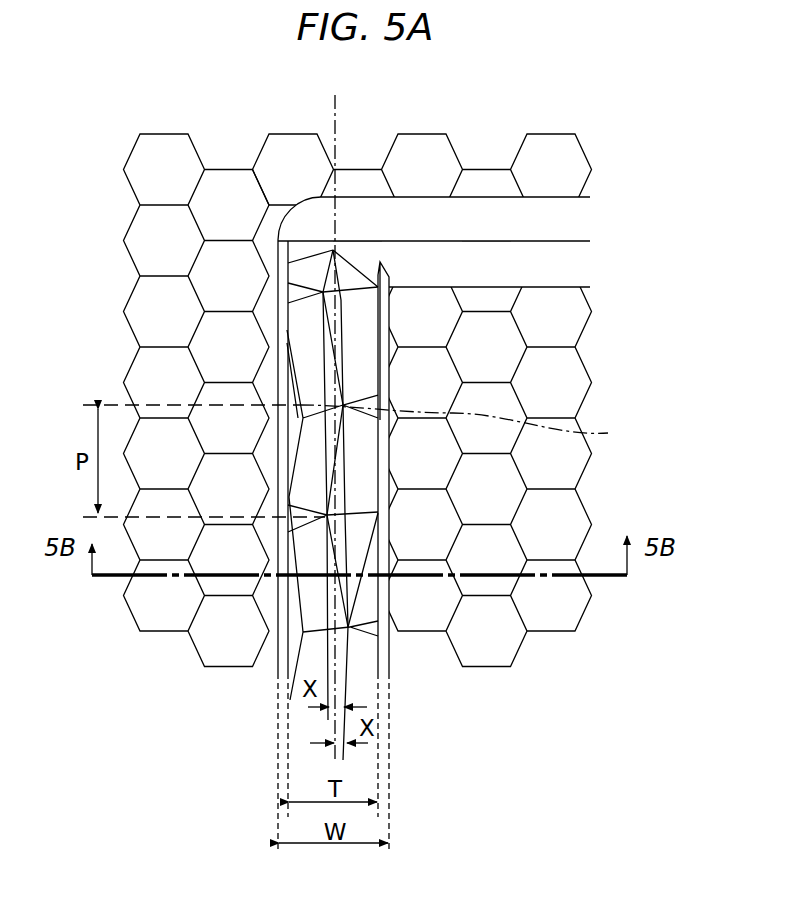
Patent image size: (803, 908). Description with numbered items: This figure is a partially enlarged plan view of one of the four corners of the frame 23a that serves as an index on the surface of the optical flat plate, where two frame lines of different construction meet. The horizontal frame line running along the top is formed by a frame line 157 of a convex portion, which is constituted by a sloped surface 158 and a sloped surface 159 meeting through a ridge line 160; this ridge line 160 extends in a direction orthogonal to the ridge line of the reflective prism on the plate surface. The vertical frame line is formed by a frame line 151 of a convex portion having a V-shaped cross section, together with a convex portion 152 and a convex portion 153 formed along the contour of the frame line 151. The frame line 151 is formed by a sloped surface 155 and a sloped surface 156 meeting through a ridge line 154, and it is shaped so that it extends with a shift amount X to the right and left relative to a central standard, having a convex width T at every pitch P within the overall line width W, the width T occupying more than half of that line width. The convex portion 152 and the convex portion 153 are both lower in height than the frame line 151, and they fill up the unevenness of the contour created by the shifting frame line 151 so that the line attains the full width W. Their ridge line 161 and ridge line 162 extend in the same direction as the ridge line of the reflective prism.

The frame 23a is at (150, 110).
The frame line of convex portion 151 is at (328, 650).
The convex portion 152 is at (282, 568).
The convex portion 153 is at (385, 562).
The ridge line 154 is at (367, 425).
The sloped surface 155 is at (317, 347).
The sloped surface 156 is at (360, 362).
The frame line of convex portion 157 is at (366, 212).
The sloped surface 158 is at (488, 208).
The sloped surface 159 is at (551, 253).
The ridge line 160 is at (420, 241).
The ridge line 161 is at (293, 593).
The ridge line 162 is at (380, 523).